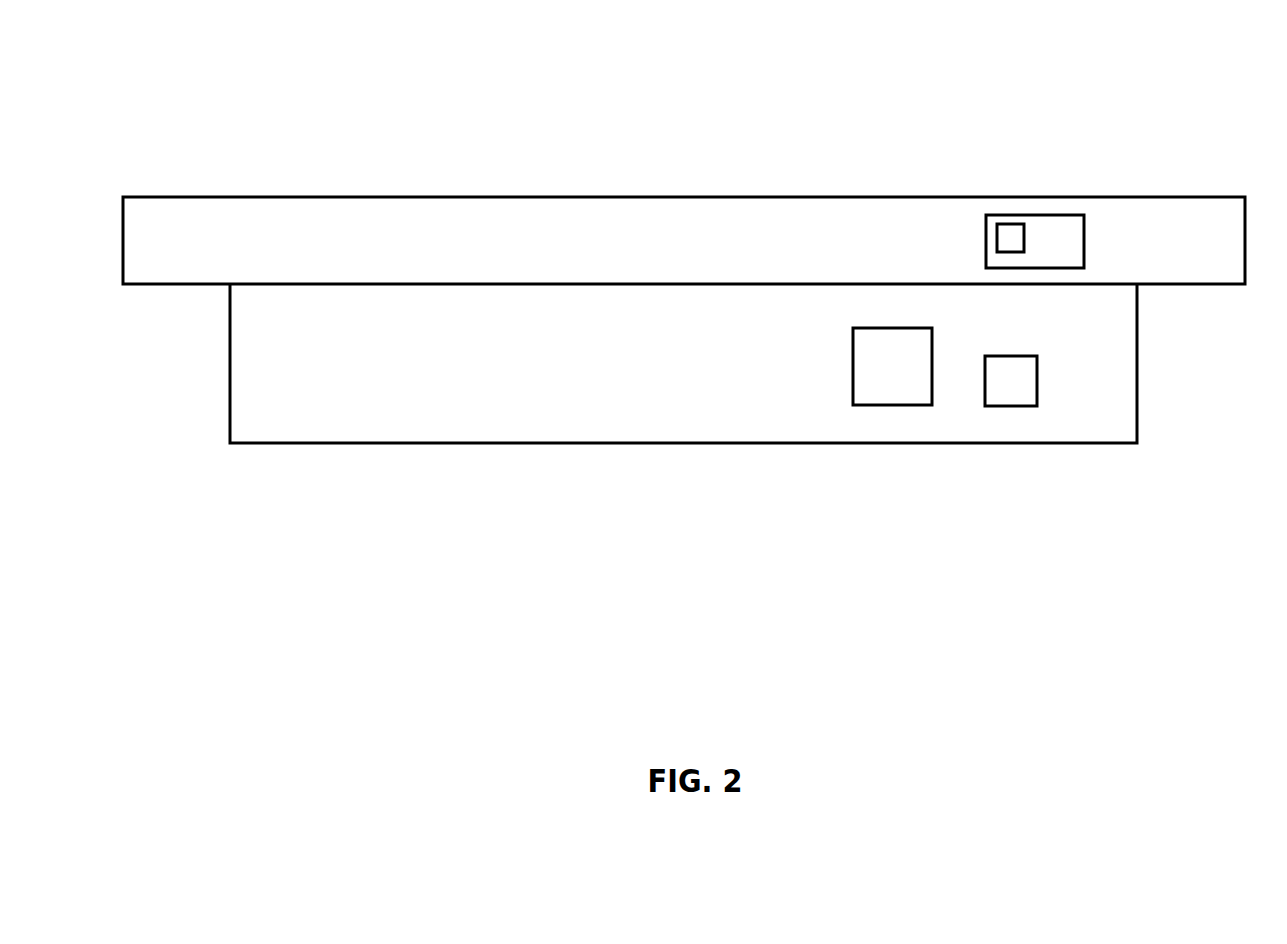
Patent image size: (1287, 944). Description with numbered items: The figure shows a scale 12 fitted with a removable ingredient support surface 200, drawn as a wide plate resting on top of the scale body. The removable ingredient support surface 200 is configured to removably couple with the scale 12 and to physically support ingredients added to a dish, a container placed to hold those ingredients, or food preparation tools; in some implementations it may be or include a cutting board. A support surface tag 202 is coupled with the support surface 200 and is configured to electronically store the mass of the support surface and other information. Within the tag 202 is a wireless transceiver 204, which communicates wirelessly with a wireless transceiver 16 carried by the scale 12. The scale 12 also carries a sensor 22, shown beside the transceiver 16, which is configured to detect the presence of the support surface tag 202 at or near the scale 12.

The removable ingredient support surface 200 is at (255, 195).
The support surface tag 202 is at (1080, 244).
The wireless transceiver 204 is at (1012, 223).
The scale 12 is at (257, 418).
The sensor 22 is at (883, 368).
The wireless transceiver 16 is at (1013, 375).